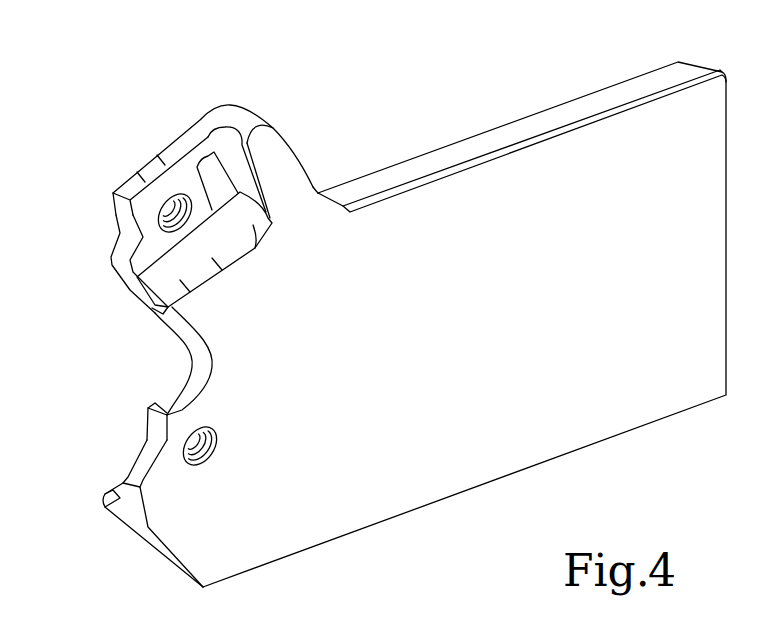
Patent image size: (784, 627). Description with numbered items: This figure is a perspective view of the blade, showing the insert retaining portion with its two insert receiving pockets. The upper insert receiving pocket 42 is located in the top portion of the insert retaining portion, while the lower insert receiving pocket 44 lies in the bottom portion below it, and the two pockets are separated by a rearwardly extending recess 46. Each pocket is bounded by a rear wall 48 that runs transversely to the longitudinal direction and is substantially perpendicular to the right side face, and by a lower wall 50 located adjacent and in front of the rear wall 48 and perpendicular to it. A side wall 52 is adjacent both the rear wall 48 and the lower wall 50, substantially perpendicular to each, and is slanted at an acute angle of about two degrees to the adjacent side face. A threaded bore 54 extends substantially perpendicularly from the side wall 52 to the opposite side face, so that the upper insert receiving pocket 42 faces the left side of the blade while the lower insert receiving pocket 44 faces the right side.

The upper insert receiving pocket 42 is at (137, 190).
The lower insert receiving pocket 44 is at (123, 468).
The rearwardly extending recess 46 is at (167, 371).
The rear wall 48 is at (232, 161).
The lower wall 50 is at (174, 286).
The side wall 52 is at (177, 177).
The threaded bore 54 is at (158, 228).